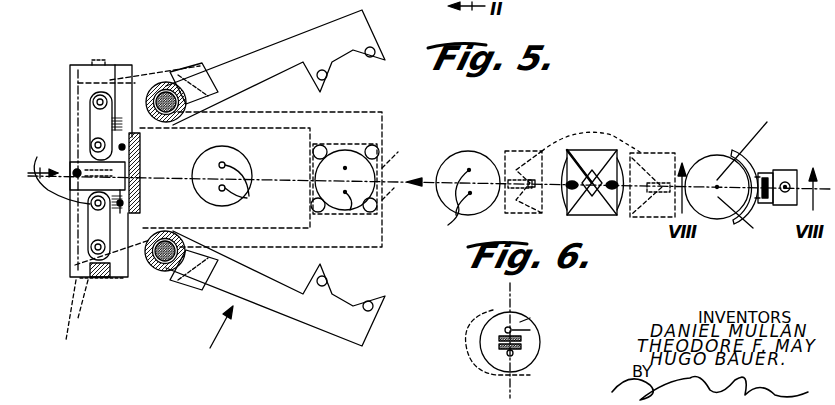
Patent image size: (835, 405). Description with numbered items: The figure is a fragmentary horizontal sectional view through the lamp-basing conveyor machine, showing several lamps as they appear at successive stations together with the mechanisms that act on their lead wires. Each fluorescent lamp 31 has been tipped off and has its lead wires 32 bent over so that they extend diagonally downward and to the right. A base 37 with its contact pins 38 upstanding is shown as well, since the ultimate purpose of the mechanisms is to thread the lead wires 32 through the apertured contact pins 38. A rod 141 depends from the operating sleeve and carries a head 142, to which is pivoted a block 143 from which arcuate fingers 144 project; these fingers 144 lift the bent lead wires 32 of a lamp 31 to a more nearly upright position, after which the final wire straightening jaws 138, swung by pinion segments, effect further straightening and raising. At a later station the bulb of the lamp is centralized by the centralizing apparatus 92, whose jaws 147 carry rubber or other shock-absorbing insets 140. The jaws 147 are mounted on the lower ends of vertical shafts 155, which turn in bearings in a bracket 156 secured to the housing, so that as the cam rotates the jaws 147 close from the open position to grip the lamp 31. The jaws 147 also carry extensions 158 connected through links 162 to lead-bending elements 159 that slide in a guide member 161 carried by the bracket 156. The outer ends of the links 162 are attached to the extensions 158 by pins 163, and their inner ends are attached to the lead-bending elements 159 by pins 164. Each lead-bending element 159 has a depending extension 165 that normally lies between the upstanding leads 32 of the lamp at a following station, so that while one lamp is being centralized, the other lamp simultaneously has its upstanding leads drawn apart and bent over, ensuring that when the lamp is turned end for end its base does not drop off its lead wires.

In FIG. 5, the fluorescent lamp 31 is at (315, 176).
In FIG. 5, the lead wires 32 is at (345, 168).
In FIG. 6, the lead wires 32 is at (508, 327).
In FIG. 5, the base 37 is at (240, 157).
In FIG. 6, the base 37 is at (522, 322).
In FIG. 5, the contact pins 38 is at (247, 198).
In FIG. 6, the contact pins 38 is at (530, 330).
In FIG. 5, the centralizing apparatus 92 is at (213, 337).
In FIG. 5, the final wire straightening jaws 138 is at (592, 152).
In FIG. 5, the shock-absorbing insets 140 is at (372, 80).
In FIG. 5, the rod 141 is at (790, 185).
In FIG. 5, the head 142 is at (793, 170).
In FIG. 5, the block 143 is at (763, 172).
In FIG. 5, the arcuate fingers 144 is at (730, 245).
In FIG. 5, the jaws 147 is at (320, 50).
In FIG. 5, the vertical shafts 155 is at (200, 70).
In FIG. 5, the bracket 156 is at (140, 160).
In FIG. 5, the extensions 158 is at (150, 86).
In FIG. 5, the lead-bending elements 159 is at (86, 322).
In FIG. 5, the guide member 161 is at (70, 276).
In FIG. 5, the links 162 is at (90, 100).
In FIG. 5, the pins 163 is at (98, 72).
In FIG. 5, the pins 164 is at (92, 145).
In FIG. 5, the depending extension 165 is at (140, 186).
In FIG. 6, the depending extension 165 is at (500, 340).